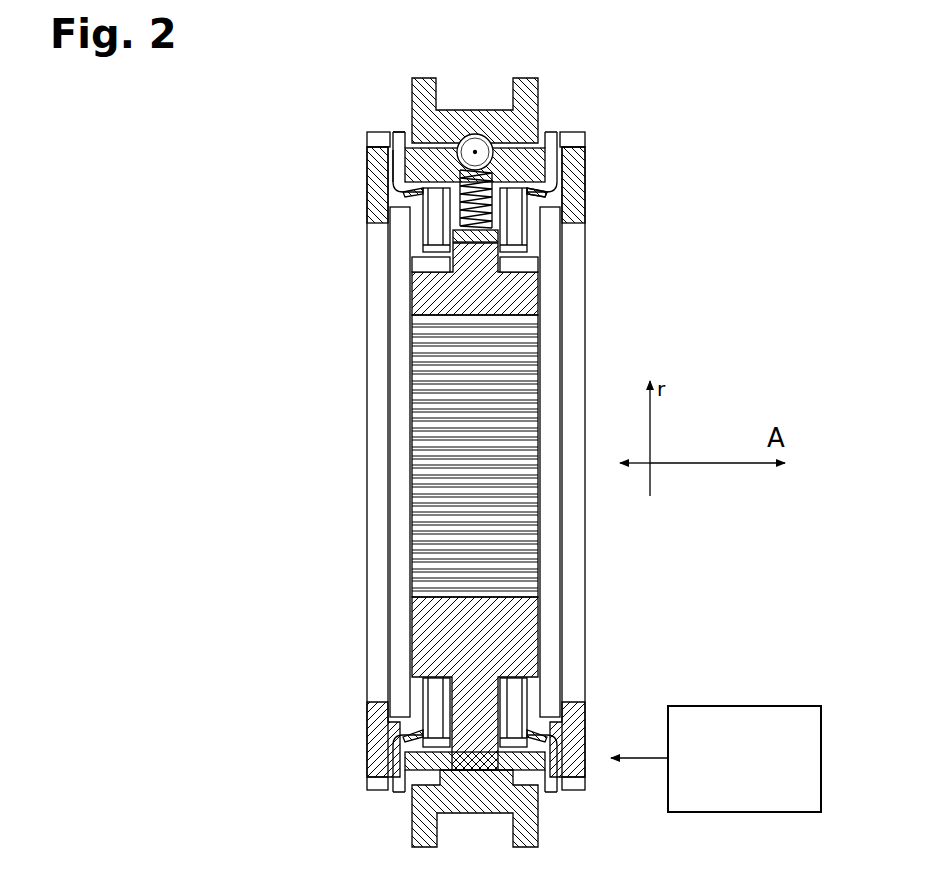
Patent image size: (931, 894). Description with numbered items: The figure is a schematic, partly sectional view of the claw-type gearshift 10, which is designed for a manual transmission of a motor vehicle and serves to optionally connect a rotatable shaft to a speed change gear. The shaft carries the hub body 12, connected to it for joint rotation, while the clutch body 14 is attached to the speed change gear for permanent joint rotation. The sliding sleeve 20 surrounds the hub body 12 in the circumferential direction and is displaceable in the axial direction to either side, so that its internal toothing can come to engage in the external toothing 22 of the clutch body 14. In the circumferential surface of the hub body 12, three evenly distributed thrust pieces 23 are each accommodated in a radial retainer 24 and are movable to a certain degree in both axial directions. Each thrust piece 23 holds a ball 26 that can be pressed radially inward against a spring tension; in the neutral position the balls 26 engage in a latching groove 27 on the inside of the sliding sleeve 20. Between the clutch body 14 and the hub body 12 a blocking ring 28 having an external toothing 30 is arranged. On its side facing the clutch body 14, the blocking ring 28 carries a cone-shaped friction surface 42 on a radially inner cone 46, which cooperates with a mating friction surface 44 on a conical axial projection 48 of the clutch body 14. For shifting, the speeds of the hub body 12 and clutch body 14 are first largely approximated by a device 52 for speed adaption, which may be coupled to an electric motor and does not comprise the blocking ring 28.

The claw-type gearshift 10 is at (240, 113).
The hub body 12 is at (417, 290).
The clutch body 14 is at (372, 213).
The sliding sleeve 20 is at (528, 110).
The external toothing 22 is at (573, 140).
The thrust piece 23 is at (553, 157).
The radial retainer 24 is at (495, 222).
The ball 26 is at (470, 134).
The latching groove 27 is at (475, 150).
The blocking ring 28 is at (395, 182).
The external toothing 30 is at (401, 132).
The friction surface 42 is at (548, 191).
The mating friction surface 44 is at (537, 192).
The radially inner cone 46 is at (407, 192).
The conical axial projection 48 is at (413, 205).
The device for speed adaption 52 is at (731, 706).